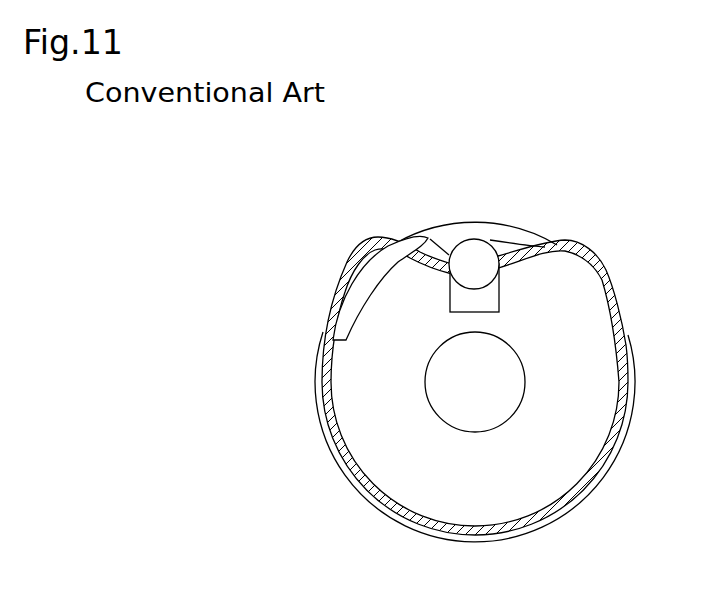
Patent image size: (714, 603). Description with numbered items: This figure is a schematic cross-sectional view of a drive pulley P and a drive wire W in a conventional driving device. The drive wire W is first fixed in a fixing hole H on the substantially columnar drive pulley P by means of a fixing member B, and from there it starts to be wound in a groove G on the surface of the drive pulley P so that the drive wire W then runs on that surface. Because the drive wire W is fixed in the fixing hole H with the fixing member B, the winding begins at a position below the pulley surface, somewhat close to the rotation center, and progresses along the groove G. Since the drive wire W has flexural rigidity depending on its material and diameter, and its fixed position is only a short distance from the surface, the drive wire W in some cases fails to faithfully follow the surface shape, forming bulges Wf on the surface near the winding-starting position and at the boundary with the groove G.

The drive wire W is at (315, 385).
The bulge Wf is at (640, 233).
The groove G is at (443, 247).
The fixing hole H is at (462, 298).
The fixing member B is at (481, 247).
The drive pulley P is at (565, 450).